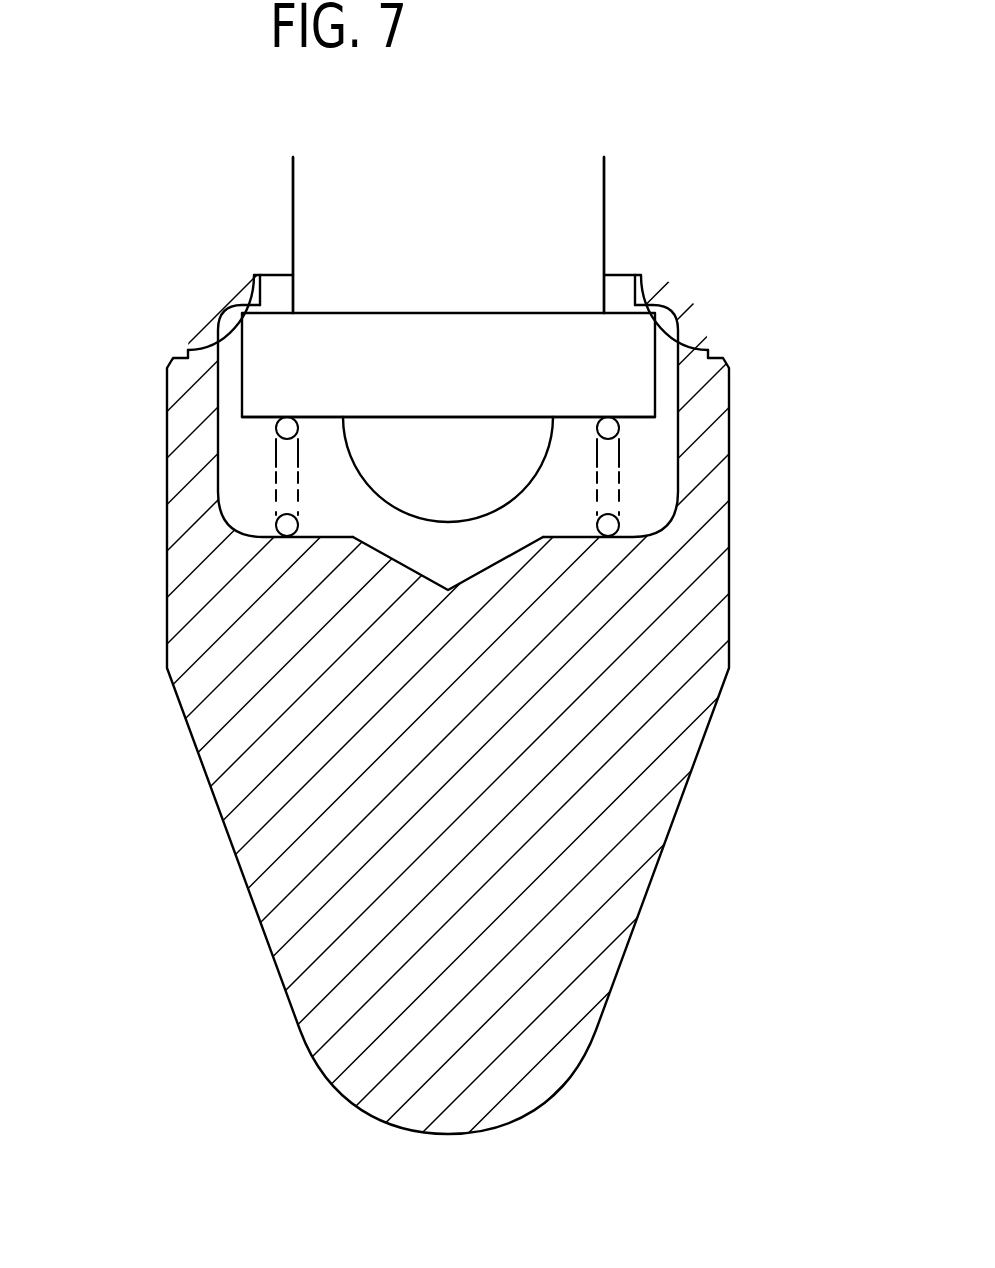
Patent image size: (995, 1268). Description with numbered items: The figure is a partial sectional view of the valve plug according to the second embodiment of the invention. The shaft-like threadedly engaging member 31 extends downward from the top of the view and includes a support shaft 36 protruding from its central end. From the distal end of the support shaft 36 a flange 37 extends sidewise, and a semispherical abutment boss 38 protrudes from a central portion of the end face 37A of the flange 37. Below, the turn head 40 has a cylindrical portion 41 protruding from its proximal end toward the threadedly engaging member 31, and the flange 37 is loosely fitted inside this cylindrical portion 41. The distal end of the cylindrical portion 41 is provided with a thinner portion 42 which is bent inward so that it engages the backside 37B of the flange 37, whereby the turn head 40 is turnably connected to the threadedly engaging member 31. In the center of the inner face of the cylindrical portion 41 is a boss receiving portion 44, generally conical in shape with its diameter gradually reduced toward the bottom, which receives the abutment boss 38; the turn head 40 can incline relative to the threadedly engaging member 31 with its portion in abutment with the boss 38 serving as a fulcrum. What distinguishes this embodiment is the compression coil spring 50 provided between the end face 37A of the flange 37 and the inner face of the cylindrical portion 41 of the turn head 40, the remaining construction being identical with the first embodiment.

The threadedly engaging member 31 is at (630, 184).
The support shaft 36 is at (557, 240).
The flange 37 is at (605, 363).
The end face 37A is at (630, 438).
The backside 37B is at (632, 296).
The abutment boss 38 is at (445, 485).
The turn head 40 is at (738, 715).
The cylindrical portion 41 is at (177, 442).
The thinner portion 42 is at (198, 316).
The boss receiving portion 44 is at (422, 579).
The compression coil spring 50 is at (608, 525).